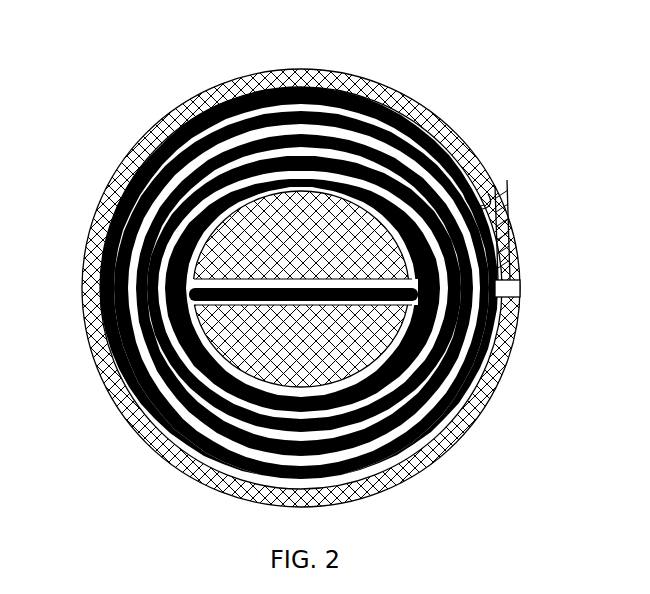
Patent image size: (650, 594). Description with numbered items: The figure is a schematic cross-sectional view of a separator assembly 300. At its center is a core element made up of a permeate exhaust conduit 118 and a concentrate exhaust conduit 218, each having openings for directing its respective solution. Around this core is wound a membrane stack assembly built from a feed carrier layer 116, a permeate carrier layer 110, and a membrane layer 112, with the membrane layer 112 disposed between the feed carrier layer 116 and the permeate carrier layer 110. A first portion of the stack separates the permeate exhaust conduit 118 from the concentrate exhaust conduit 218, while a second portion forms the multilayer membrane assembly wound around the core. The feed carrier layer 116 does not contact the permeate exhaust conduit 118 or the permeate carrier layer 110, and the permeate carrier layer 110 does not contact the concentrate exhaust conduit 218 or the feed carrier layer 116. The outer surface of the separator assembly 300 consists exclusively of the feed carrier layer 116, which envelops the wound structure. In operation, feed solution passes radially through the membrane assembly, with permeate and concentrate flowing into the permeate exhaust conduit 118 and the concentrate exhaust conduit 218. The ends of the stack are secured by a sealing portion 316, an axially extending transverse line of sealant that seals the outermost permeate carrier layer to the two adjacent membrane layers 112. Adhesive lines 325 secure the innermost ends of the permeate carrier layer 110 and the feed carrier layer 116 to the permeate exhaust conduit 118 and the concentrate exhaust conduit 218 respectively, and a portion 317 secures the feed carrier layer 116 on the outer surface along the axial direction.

The separator assembly 300 is at (82, 54).
The permeate carrier layer 110 is at (432, 110).
The membrane layer 112 is at (498, 208).
The feed carrier layer 116 is at (504, 262).
The permeate exhaust conduit 118 is at (135, 125).
The concentrate exhaust conduit 218 is at (165, 432).
The sealing portion 316 is at (480, 190).
The portion 317 is at (514, 282).
The adhesive lines 325 is at (492, 346).